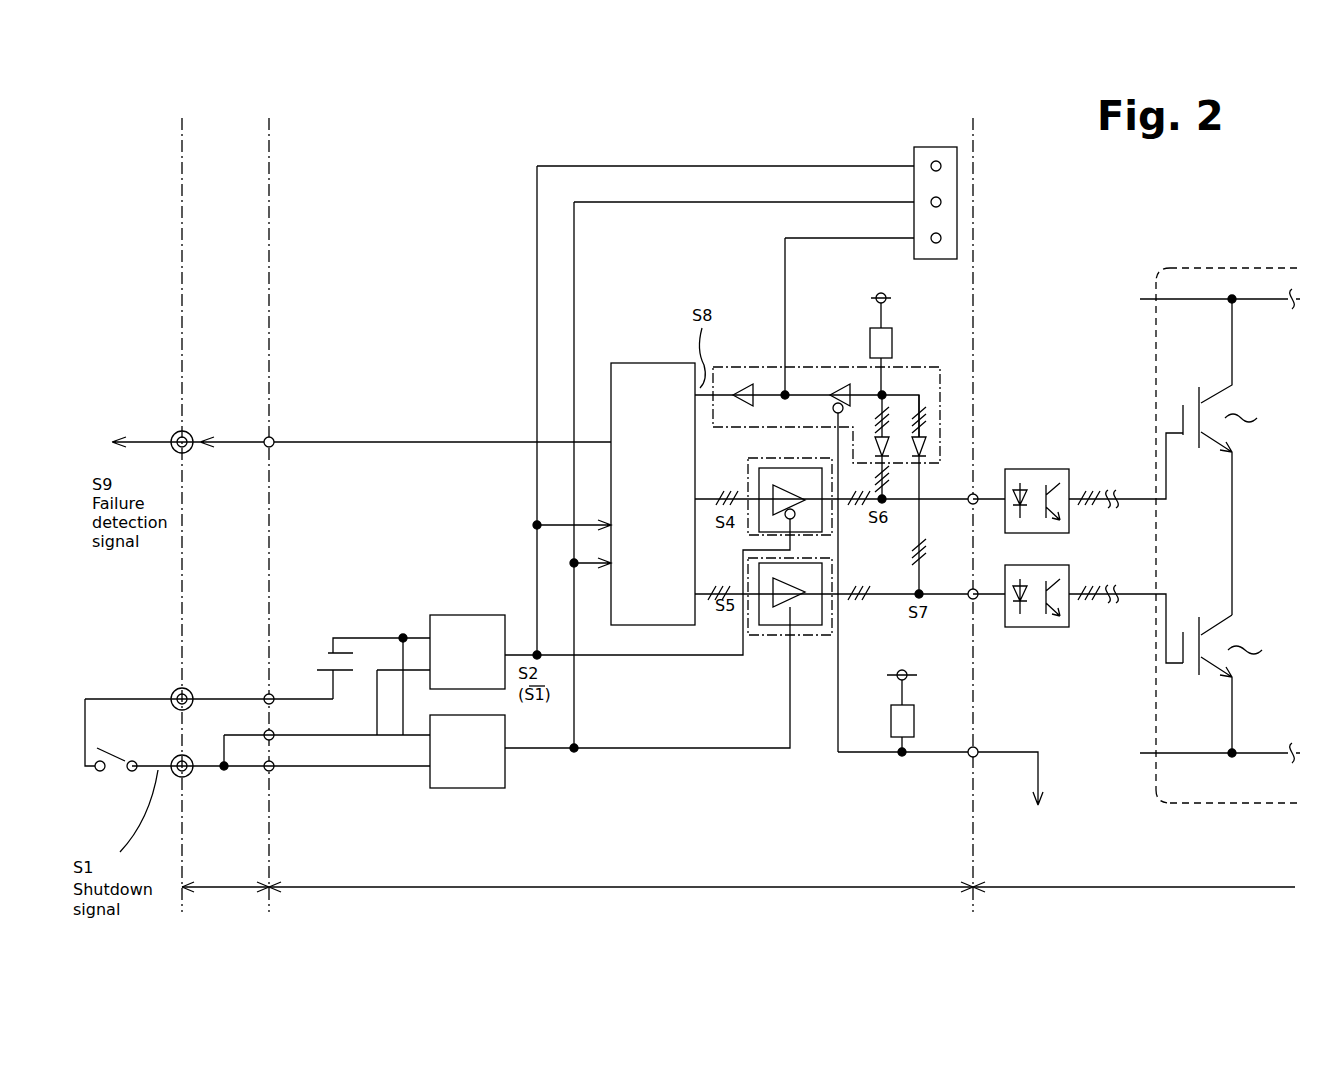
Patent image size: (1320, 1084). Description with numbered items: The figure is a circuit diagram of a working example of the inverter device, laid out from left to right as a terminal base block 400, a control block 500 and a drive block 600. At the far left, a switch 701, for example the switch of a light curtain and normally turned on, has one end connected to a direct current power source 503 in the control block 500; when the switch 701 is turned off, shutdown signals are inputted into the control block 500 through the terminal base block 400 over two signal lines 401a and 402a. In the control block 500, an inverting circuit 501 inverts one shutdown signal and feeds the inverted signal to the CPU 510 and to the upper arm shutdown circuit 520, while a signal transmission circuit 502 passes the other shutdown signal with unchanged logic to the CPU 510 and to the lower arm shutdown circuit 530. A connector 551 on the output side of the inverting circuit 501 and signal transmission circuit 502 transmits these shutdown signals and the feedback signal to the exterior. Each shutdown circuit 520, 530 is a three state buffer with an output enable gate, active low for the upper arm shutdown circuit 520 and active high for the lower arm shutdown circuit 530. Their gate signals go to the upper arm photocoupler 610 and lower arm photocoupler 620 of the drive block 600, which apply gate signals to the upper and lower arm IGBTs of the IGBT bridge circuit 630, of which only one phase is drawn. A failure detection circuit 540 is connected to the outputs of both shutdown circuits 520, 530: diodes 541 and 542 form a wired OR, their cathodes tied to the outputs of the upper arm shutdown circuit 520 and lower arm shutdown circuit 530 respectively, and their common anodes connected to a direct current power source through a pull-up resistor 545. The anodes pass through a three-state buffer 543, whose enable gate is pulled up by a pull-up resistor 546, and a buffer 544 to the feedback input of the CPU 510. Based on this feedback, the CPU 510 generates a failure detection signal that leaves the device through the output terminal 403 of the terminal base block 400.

The terminal base block 400 is at (225, 897).
The control block 500 is at (621, 897).
The drive block 600 is at (1134, 897).
The output terminal 403 is at (172, 432).
The signal line 401a is at (242, 730).
The signal line 402a is at (247, 768).
The switch 701 is at (115, 780).
The direct current power source 503 is at (327, 648).
The inverting circuit 501 is at (470, 615).
The signal transmission circuit 502 is at (465, 777).
The connector 551 is at (934, 150).
The CPU 510 is at (652, 365).
The upper arm shutdown circuit 520 is at (748, 478).
The lower arm shutdown circuit 530 is at (767, 637).
The failure detection circuit 540 is at (813, 363).
The diode 541 is at (898, 388).
The diode 542 is at (948, 442).
The three-state buffer 543 is at (838, 388).
The buffer 544 is at (740, 388).
The pull-up resistor 545 is at (884, 337).
The pull-up resistor 546 is at (895, 733).
The upper arm photocoupler 610 is at (1040, 470).
The lower arm photocoupler 620 is at (1032, 628).
The IGBT bridge circuit 630 is at (1226, 268).